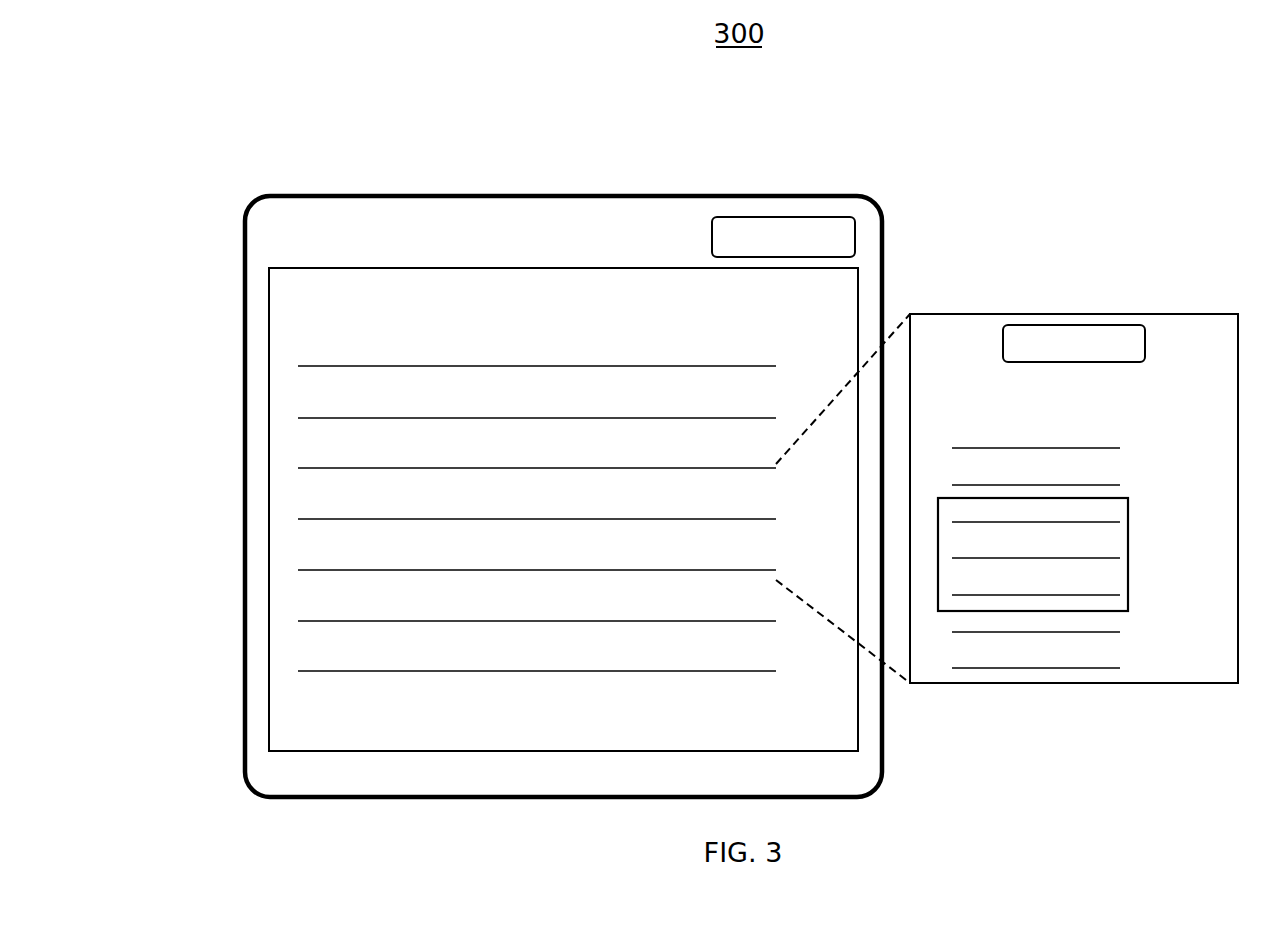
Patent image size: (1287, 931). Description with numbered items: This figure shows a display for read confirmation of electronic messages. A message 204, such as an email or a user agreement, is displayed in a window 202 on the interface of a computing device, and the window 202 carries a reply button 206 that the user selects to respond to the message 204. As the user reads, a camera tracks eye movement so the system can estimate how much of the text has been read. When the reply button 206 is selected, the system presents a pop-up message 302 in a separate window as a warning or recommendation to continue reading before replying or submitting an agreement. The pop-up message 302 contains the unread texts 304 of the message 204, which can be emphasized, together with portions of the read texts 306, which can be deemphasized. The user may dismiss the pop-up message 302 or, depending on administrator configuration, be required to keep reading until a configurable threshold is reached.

The window 202 is at (492, 197).
The message 204 is at (269, 324).
The reply button 206 is at (855, 237).
The pop-up message 302 is at (1050, 314).
The unread texts 304 is at (1128, 556).
The read texts 306 is at (1120, 458).